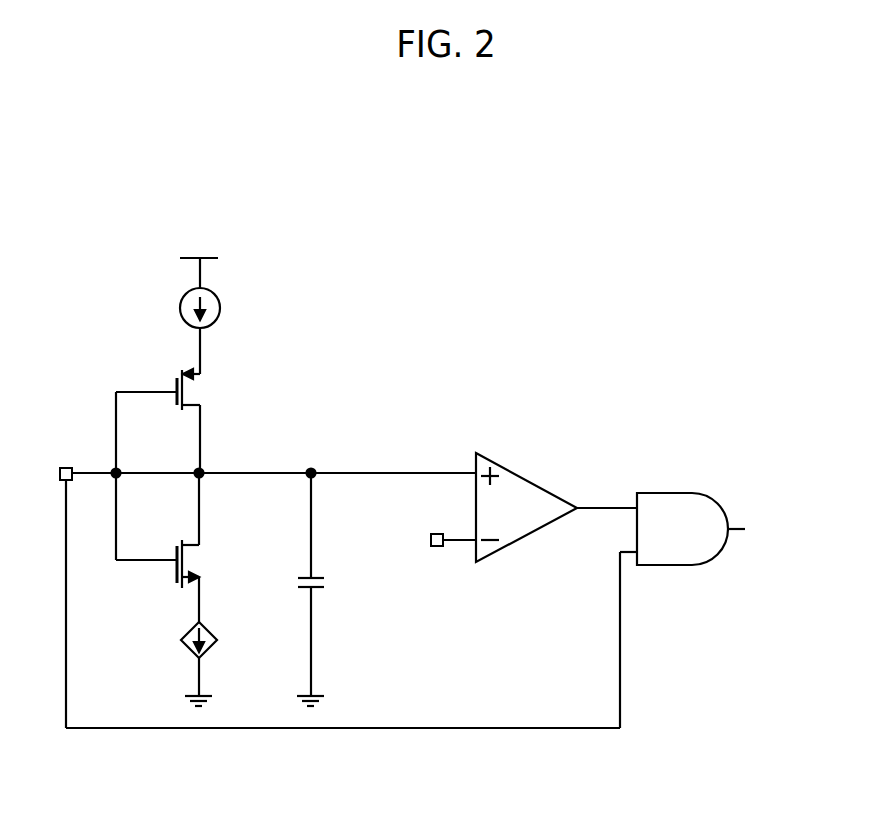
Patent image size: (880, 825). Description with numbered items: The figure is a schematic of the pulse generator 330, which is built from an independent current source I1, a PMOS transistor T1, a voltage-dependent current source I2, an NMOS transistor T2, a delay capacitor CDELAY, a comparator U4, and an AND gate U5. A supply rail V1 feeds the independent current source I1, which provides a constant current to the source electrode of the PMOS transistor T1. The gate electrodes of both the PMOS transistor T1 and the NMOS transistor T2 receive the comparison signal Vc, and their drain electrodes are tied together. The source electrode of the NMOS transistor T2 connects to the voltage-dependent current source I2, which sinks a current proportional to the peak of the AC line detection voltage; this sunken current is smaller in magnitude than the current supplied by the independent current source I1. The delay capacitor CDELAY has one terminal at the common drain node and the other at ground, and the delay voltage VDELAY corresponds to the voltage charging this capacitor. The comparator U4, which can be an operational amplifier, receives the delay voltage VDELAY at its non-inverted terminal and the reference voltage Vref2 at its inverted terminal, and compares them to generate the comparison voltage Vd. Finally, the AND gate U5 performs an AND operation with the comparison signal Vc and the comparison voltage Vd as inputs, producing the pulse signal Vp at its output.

The pulse generator 330 is at (346, 234).
The supply voltage V1 is at (199, 259).
The independent current source I1 is at (212, 308).
The PMOS transistor T1 is at (176, 389).
The NMOS transistor T2 is at (176, 564).
The voltage-dependent current source I2 is at (211, 640).
The comparison signal Vc is at (51, 475).
The delay voltage VDELAY is at (323, 506).
The delay capacitor CDELAY is at (342, 585).
The comparator U4 is at (526, 520).
The reference voltage Vref2 is at (419, 545).
The comparison voltage Vd is at (607, 493).
The AND gate U5 is at (682, 550).
The pulse signal Vp is at (752, 533).